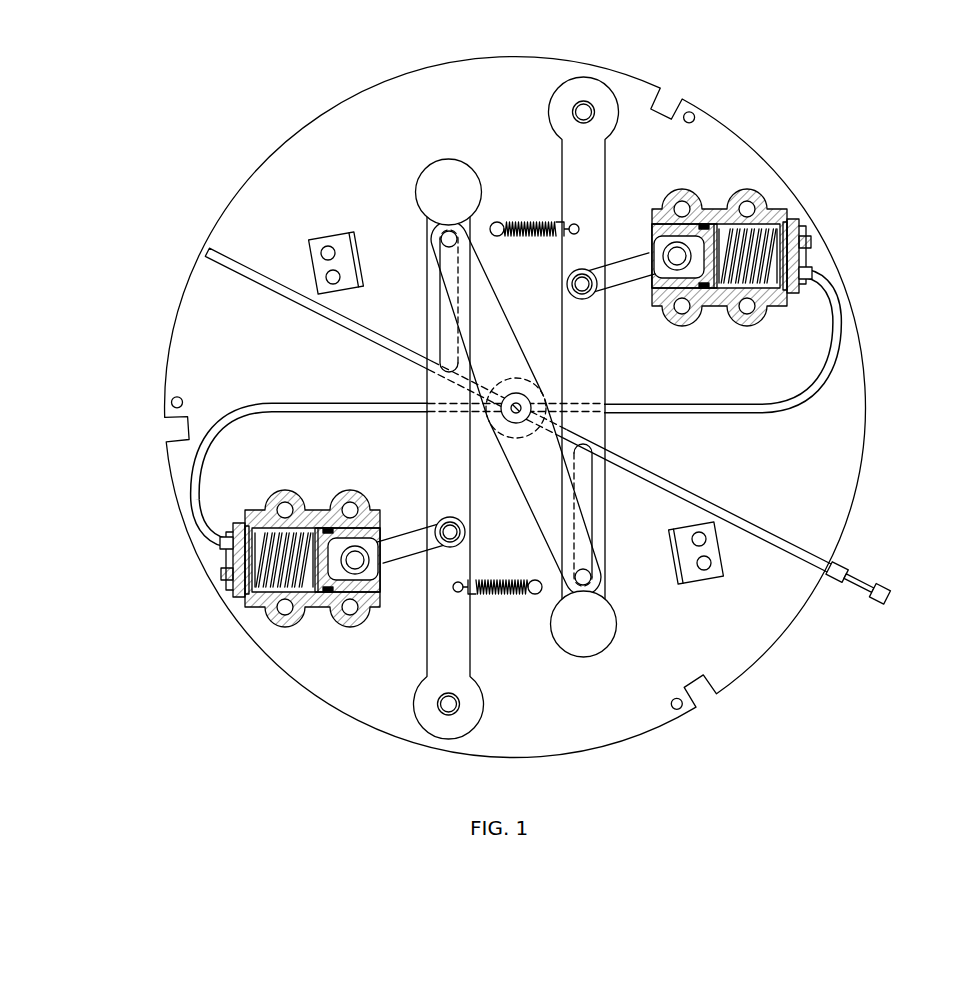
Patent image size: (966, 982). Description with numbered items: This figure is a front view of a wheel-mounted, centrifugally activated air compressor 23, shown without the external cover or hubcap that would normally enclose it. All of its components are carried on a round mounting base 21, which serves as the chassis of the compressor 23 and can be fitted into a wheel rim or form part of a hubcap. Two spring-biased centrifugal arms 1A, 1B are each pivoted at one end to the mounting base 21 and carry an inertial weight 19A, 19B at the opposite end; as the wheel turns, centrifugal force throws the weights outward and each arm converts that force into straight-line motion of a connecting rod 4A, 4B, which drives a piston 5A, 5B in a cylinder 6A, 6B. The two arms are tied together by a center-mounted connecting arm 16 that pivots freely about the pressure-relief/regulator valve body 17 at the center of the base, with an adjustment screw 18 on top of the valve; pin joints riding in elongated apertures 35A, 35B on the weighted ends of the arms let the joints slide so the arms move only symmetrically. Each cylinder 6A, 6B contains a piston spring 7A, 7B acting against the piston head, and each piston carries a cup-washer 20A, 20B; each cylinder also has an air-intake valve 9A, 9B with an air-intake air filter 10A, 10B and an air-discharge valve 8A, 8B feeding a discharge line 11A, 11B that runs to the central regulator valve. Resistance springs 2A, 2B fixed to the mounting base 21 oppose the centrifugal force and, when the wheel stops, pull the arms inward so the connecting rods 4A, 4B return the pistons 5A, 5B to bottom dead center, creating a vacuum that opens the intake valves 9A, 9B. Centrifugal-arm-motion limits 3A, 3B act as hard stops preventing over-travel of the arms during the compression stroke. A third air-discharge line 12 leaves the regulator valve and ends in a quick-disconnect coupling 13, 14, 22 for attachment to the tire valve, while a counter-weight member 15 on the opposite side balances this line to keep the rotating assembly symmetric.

The wheel-mounted air compressor 23 is at (94, 178).
The mounting base 21 is at (323, 130).
The inertial weight 19A is at (427, 163).
The inertial weight 19B is at (610, 647).
The centrifugal arm 1A is at (427, 722).
The centrifugal arm 1B is at (602, 95).
The connecting arm 16 is at (483, 305).
The elongated aperture 35A is at (447, 352).
The elongated aperture 35B is at (587, 487).
The pressure-relief/regulator valve body 17 is at (540, 386).
The adjustment screw 18 is at (512, 423).
The resistance spring 2A is at (510, 596).
The resistance spring 2B is at (543, 223).
The centrifugal-arm-motion limit 3A is at (313, 245).
The centrifugal-arm-motion limit 3B is at (723, 573).
The connecting rod 4A is at (407, 537).
The connecting rod 4B is at (630, 282).
The piston 5A is at (357, 583).
The piston 5B is at (663, 232).
The cylinder 6A is at (340, 495).
The cylinder 6B is at (712, 208).
The piston spring 7A is at (277, 505).
The piston spring 7B is at (770, 212).
The air-discharge valve 8A is at (222, 543).
The air-discharge valve 8B is at (803, 280).
The air-intake valve 9A is at (245, 593).
The air-intake valve 9B is at (787, 253).
The air-intake air filter 10A is at (243, 580).
The air-intake air filter 10B is at (806, 239).
The discharge line 11A is at (196, 467).
The discharge line 11B is at (828, 366).
The third air-discharge line 12 is at (740, 516).
The quick-disconnect coupling 13 is at (847, 563).
The quick-disconnect coupling 14 is at (864, 592).
The counter-weight member 15 is at (238, 282).
The cup-washer 20A is at (330, 596).
The cup-washer 20B is at (700, 303).
The quick-disconnect coupling 22 is at (884, 586).